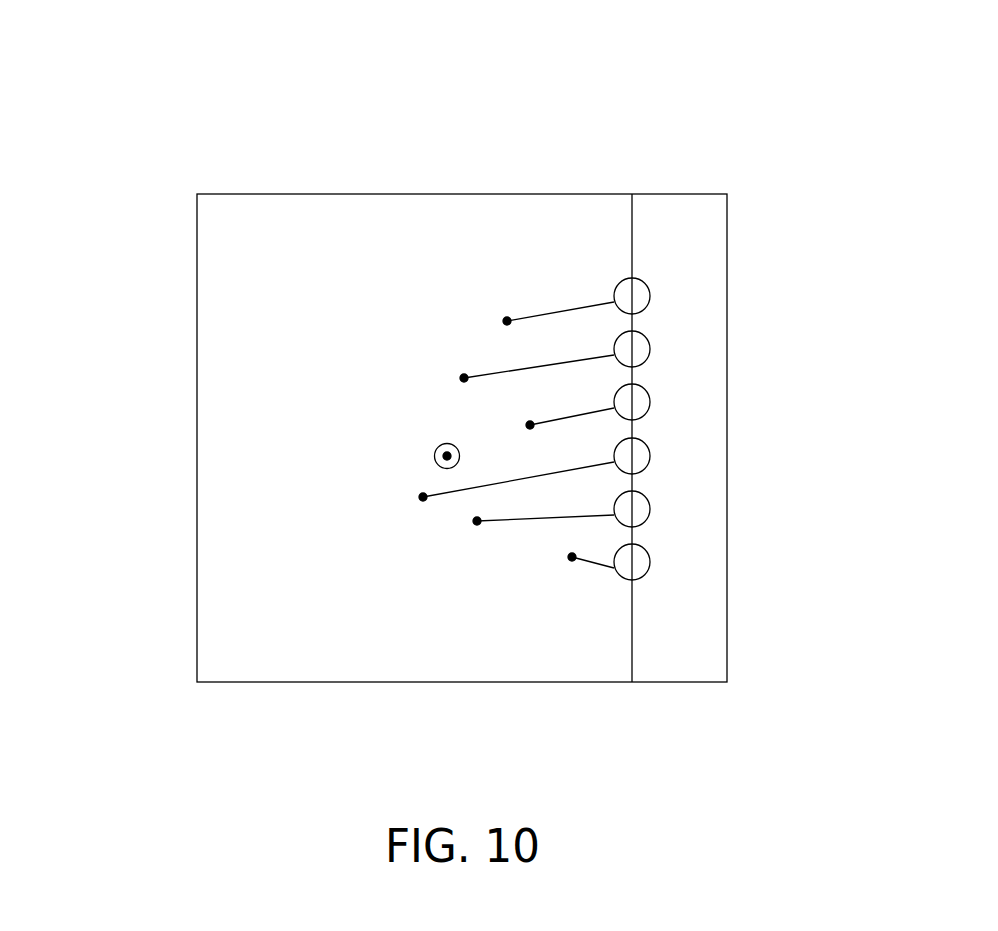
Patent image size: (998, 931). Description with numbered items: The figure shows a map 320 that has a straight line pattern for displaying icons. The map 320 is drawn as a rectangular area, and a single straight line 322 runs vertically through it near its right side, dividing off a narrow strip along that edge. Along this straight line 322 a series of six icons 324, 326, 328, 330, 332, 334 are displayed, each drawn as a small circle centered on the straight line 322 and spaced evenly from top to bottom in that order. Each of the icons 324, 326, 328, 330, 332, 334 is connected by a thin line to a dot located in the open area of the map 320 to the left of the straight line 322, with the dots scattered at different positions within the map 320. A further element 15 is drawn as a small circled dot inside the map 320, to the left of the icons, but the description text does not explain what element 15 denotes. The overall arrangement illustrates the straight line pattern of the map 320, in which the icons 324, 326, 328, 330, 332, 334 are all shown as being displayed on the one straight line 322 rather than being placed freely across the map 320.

The map 320 is at (838, 106).
The contact point 15 is at (439, 446).
The straight line 322 is at (632, 228).
The icon 324 is at (650, 288).
The icon 326 is at (650, 341).
The icon 328 is at (650, 394).
The icon 330 is at (650, 448).
The icon 332 is at (650, 501).
The icon 334 is at (650, 554).